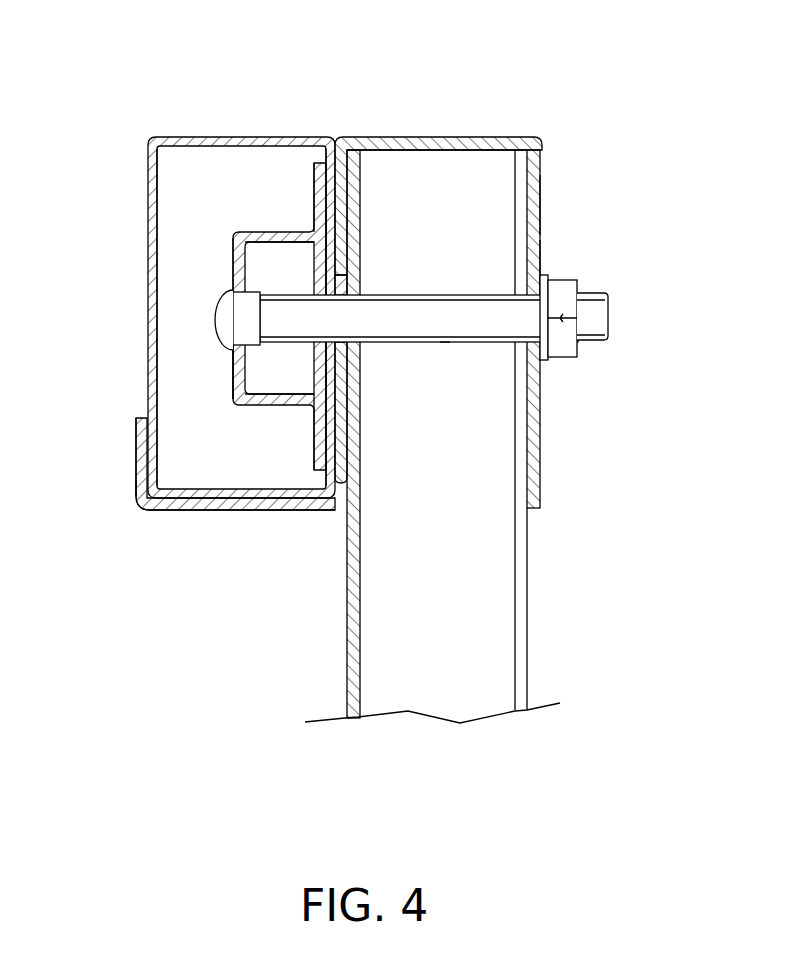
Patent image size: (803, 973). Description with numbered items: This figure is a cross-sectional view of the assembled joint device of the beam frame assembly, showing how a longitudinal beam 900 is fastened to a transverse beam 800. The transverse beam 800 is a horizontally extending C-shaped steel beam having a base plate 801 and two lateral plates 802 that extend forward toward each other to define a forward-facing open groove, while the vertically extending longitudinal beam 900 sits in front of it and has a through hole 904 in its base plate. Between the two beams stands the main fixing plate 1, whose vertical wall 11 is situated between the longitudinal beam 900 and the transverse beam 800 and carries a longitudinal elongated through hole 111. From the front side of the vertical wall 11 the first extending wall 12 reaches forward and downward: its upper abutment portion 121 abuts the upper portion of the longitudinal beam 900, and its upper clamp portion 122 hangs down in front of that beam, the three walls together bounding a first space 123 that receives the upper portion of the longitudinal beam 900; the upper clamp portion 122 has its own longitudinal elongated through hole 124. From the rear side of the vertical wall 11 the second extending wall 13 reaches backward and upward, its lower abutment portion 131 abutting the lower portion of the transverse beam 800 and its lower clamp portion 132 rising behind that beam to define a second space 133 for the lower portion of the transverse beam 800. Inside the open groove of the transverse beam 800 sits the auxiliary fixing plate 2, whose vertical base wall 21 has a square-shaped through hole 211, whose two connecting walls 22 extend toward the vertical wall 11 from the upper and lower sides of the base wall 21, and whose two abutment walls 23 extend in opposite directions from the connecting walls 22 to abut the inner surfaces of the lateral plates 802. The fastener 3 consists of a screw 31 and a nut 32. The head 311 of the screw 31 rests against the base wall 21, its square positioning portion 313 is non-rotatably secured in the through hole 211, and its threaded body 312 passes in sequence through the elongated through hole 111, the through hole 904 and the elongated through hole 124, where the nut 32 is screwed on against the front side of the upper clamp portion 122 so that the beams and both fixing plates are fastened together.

The main fixing plate 1 is at (481, 366).
The auxiliary fixing plate 2 is at (279, 78).
The fastener 3 is at (382, 327).
The vertical wall 11 is at (363, 150).
The first extending wall 12 is at (622, 67).
The second extending wall 13 is at (200, 578).
The base wall 21 is at (233, 270).
The connecting walls 22 is at (275, 237).
The abutment walls 23 is at (314, 195).
The screw 31 is at (349, 327).
The nut 32 is at (567, 347).
The longitudinal elongated through hole 111 is at (350, 283).
The upper abutment portion 121 is at (482, 137).
The upper clamp portion 122 is at (531, 172).
The first space 123 is at (539, 208).
The longitudinal elongated through hole 124 is at (540, 272).
The lower abutment portion 131 is at (198, 507).
The lower clamp portion 132 is at (139, 505).
The second space 133 is at (140, 449).
The through hole 211 is at (235, 357).
The head 311 is at (222, 320).
The threaded body 312 is at (470, 330).
The positioning portion 313 is at (243, 328).
The transverse beam 800 is at (148, 130).
The base plate 801 is at (150, 207).
The lateral plates 802 is at (330, 150).
The longitudinal beam 900 is at (520, 628).
The through hole 904 is at (445, 345).